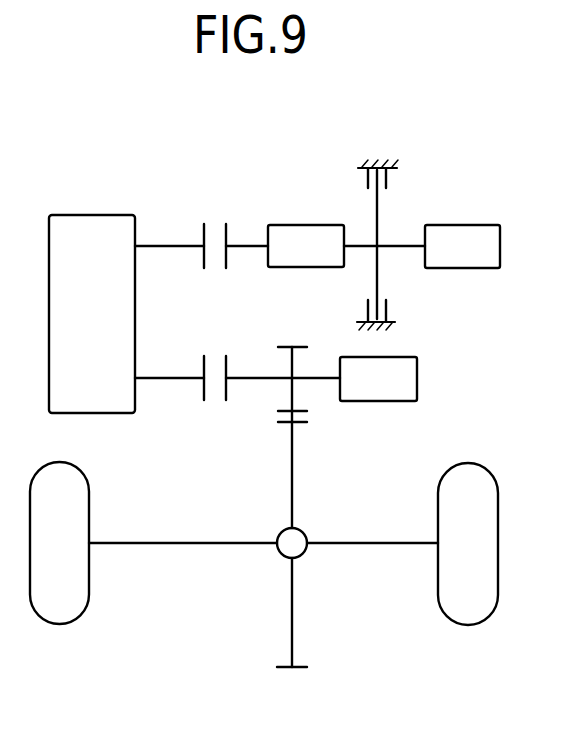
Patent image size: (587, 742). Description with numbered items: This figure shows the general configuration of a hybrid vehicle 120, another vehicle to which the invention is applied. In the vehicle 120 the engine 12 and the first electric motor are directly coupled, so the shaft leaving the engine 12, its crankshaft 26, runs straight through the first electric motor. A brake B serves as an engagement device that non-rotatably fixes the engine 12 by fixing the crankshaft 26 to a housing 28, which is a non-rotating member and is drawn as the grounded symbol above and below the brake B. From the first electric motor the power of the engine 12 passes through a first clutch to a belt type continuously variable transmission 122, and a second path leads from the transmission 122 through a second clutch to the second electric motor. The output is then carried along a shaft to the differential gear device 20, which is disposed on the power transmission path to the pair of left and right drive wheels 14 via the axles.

The hybrid vehicle 120 is at (445, 128).
The belt type continuously variable transmission 122 is at (84, 393).
The engine 12 is at (458, 228).
The crankshaft 26 is at (410, 250).
The housing 28 is at (367, 163).
The brake B is at (388, 178).
The differential gear device 20 is at (285, 540).
The drive wheels 14 is at (56, 602).